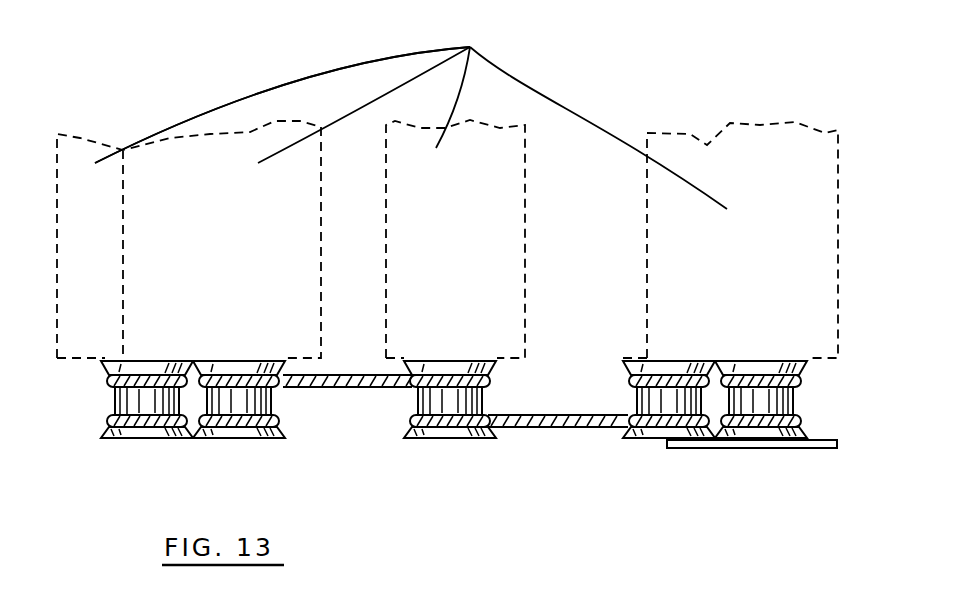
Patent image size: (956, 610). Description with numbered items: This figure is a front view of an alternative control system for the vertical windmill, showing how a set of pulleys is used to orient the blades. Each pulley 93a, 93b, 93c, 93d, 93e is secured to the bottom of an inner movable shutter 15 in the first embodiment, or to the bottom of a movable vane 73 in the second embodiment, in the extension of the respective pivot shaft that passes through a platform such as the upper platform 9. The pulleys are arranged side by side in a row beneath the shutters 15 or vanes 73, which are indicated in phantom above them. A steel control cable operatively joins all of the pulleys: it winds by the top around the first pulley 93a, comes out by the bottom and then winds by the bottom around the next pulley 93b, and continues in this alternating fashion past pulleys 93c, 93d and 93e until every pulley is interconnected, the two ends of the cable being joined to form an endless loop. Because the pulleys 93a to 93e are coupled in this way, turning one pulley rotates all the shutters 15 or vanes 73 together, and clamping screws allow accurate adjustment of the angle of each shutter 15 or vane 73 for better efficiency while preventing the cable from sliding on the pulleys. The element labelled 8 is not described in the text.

The inner movable shutter 15 is at (411, 111).
The vane 73 is at (282, 105).
The pulley 93a is at (153, 361).
The pulley 93b is at (243, 361).
The pulley 93c is at (442, 361).
The pulley 93d is at (693, 361).
The pulley 93e is at (773, 361).
The belt 8 is at (342, 387).
The upper platform 9 is at (792, 448).